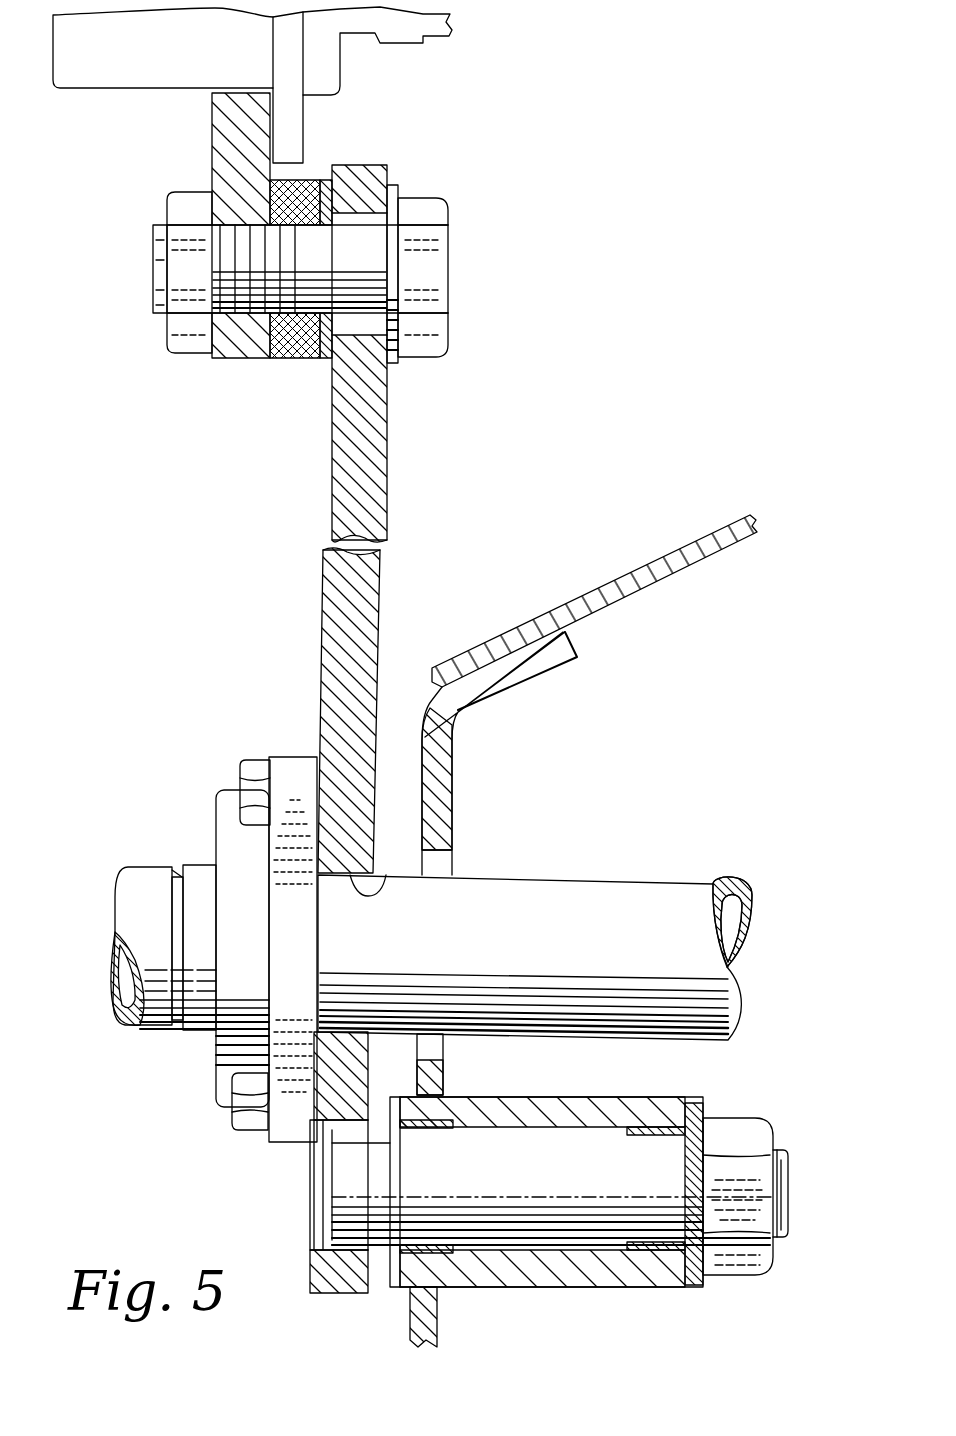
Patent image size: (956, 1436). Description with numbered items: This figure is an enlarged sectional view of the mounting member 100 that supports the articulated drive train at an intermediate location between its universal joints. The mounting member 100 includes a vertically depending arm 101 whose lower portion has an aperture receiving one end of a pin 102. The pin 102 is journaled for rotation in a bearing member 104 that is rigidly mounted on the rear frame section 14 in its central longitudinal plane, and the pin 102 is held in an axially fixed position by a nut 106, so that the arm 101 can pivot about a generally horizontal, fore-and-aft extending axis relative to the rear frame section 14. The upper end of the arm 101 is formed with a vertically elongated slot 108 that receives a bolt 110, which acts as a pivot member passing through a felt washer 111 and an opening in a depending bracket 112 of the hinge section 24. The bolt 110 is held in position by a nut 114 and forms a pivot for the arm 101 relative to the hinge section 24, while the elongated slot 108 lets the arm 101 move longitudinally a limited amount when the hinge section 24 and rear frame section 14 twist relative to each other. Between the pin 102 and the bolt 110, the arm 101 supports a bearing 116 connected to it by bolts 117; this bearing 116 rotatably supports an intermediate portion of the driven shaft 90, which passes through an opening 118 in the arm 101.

The hinge section 24 is at (110, 90).
The depending bracket 112 is at (232, 160).
The felt washer 111 is at (297, 190).
The vertically elongated slot 108 is at (417, 200).
The nut 114 is at (182, 222).
The bolt 110 is at (360, 260).
The vertically depending arm 101 is at (342, 497).
The mounting member 100 is at (383, 567).
The rear frame section 14 is at (660, 558).
The driven shaft 90 is at (632, 903).
The opening 118 is at (395, 873).
The bearing 116 is at (232, 838).
The bolts 117 is at (255, 790).
The pin 102 is at (528, 1167).
The bearing member 104 is at (532, 1267).
The nut 106 is at (743, 1135).